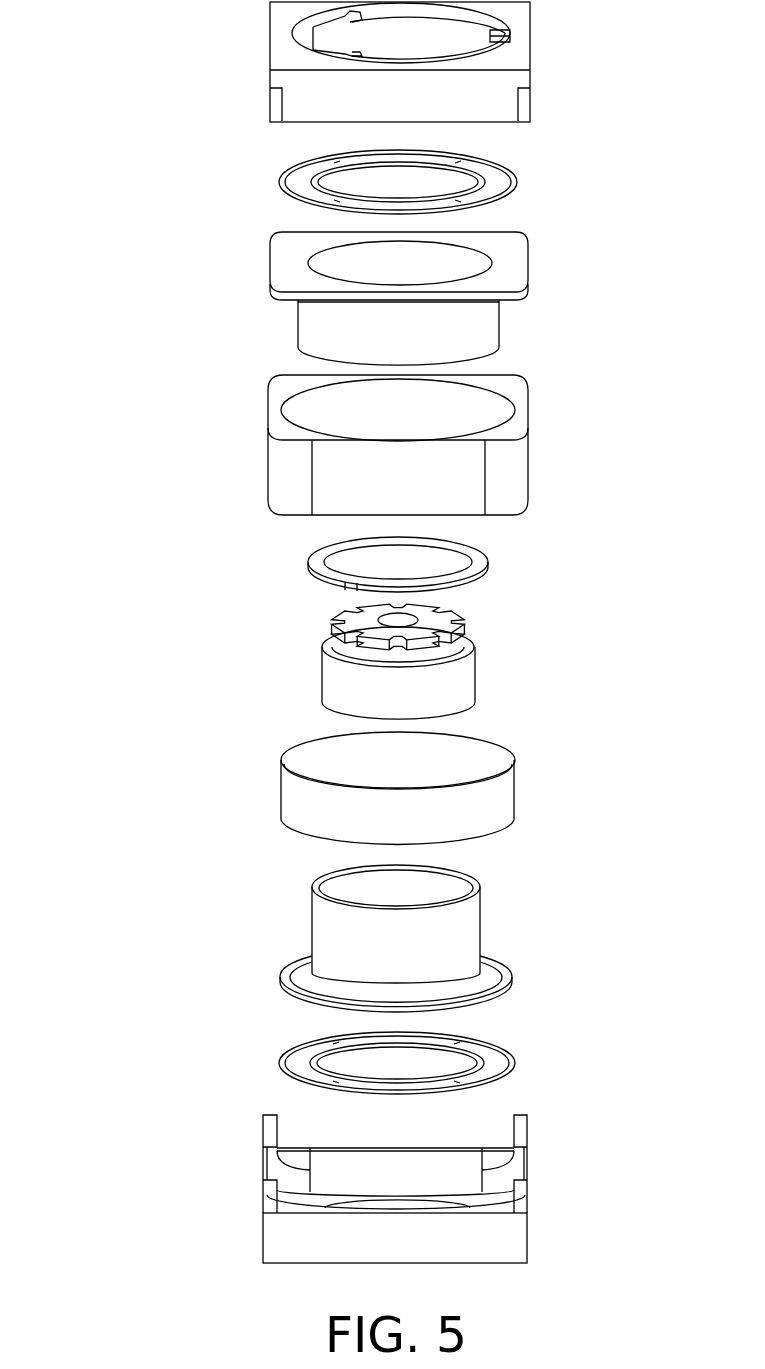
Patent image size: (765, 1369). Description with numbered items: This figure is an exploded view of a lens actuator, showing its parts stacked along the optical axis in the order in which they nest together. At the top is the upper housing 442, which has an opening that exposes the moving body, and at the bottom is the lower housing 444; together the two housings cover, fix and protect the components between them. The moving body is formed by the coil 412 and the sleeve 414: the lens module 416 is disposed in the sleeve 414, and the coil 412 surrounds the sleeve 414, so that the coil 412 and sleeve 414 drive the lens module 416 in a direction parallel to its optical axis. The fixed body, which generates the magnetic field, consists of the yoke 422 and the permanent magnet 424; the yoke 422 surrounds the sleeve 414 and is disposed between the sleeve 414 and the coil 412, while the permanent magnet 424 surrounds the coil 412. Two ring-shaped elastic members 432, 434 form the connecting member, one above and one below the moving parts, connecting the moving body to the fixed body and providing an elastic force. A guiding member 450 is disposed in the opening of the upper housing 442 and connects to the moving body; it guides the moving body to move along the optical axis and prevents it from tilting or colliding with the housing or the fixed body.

The upper housing 442 is at (290, 47).
The elastic member 432 is at (280, 182).
The yoke 422 is at (278, 268).
The permanent magnet 424 is at (280, 462).
The guiding member 450 is at (318, 565).
The lens module 416 is at (333, 675).
The coil 412 is at (287, 798).
The sleeve 414 is at (327, 928).
The elastic member 434 is at (283, 1065).
The lower housing 444 is at (283, 1242).